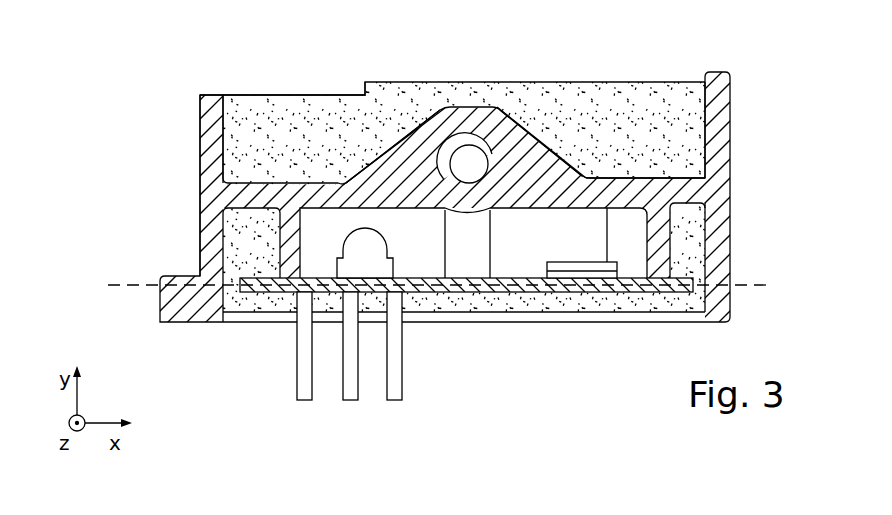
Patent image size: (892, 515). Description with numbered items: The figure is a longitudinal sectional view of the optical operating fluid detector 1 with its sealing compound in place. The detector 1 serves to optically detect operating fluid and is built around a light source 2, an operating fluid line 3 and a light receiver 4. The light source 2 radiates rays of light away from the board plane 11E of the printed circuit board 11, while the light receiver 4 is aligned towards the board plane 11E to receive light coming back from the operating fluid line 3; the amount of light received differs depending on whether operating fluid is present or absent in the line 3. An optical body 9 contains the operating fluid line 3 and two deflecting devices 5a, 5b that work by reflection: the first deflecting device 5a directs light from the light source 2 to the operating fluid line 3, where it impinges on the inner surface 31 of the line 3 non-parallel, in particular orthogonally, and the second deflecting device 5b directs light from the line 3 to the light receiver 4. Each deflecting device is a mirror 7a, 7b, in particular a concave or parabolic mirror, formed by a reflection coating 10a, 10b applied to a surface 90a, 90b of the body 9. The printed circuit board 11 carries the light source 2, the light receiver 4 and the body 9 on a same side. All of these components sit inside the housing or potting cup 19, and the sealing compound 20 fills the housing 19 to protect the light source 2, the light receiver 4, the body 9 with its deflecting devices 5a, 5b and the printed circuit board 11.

The optical operating fluid detector 1 is at (172, 81).
The light source 2 is at (383, 263).
The operating fluid line 3 is at (470, 145).
The inner surface of the operating fluid line 31 is at (452, 132).
The light receiver 4 is at (590, 266).
The optical deflecting device 5a is at (377, 99).
The mirror 7a is at (380, 157).
The optical deflecting device 5b is at (576, 95).
The mirror 7b is at (556, 156).
The optical body 9 is at (367, 170).
The surface of the body 90a is at (387, 151).
The surface of the body 90b is at (578, 168).
The reflection coating 10a is at (370, 158).
The reflection coating 10b is at (580, 167).
The printed circuit board 11 is at (473, 292).
The board plane 11E is at (140, 288).
The housing or potting cup 19 is at (215, 201).
The sealing compound 20 is at (505, 97).